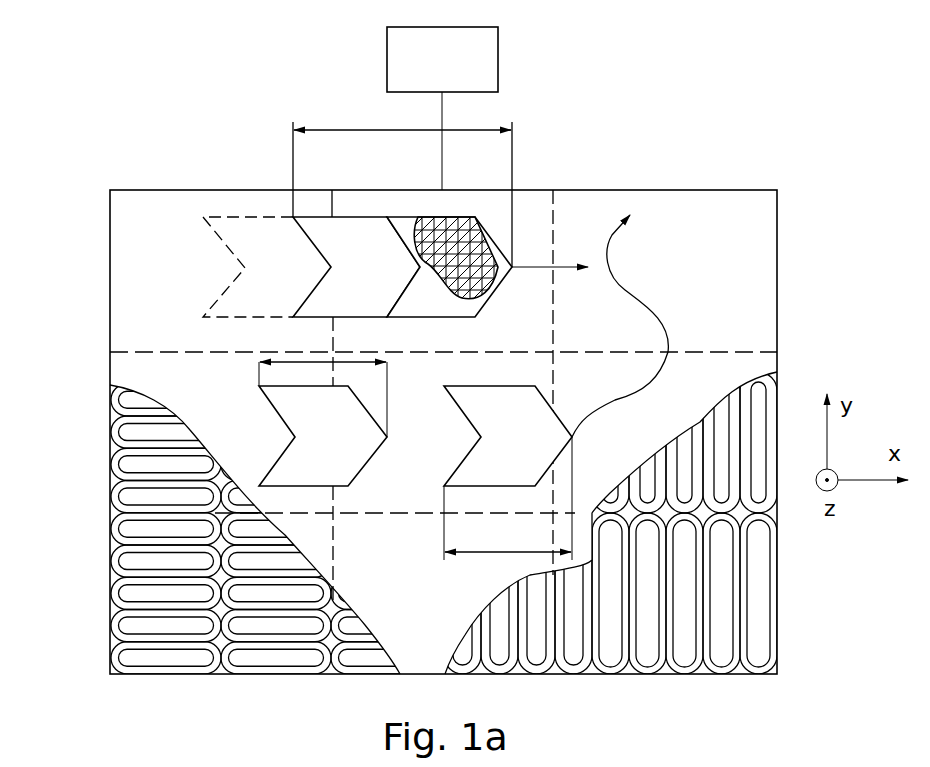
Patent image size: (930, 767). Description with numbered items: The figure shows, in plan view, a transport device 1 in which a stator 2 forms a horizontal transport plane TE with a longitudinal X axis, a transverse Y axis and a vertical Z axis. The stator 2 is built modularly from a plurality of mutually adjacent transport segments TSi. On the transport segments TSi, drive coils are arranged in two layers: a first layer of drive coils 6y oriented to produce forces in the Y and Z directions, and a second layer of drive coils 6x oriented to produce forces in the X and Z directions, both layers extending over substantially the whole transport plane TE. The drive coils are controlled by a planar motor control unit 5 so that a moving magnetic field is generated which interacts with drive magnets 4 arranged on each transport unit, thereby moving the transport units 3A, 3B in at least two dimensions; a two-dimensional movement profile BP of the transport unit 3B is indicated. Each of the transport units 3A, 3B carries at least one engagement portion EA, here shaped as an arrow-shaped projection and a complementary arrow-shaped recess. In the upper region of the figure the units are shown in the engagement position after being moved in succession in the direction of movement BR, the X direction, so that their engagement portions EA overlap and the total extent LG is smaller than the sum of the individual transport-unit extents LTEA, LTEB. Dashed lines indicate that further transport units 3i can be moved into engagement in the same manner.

The transport device 1 is at (741, 139).
The stator 2 is at (757, 230).
The further transport unit 3i is at (250, 282).
The transport unit 3A is at (350, 282).
The transport unit 3B is at (410, 312).
The drive magnets 4 is at (458, 235).
The planar motor control unit 5 is at (433, 74).
The drive coils 6x is at (720, 672).
The drive coils 6y is at (117, 620).
The total extent LG is at (402, 185).
The transport-unit extent LTEA is at (323, 381).
The transport-unit extent LTEB is at (508, 498).
The direction of movement BR is at (552, 252).
The movement profile BP is at (655, 308).
The transport plane TE is at (684, 232).
The transport segments TSi is at (175, 245).
The engagement portion EA is at (292, 435).